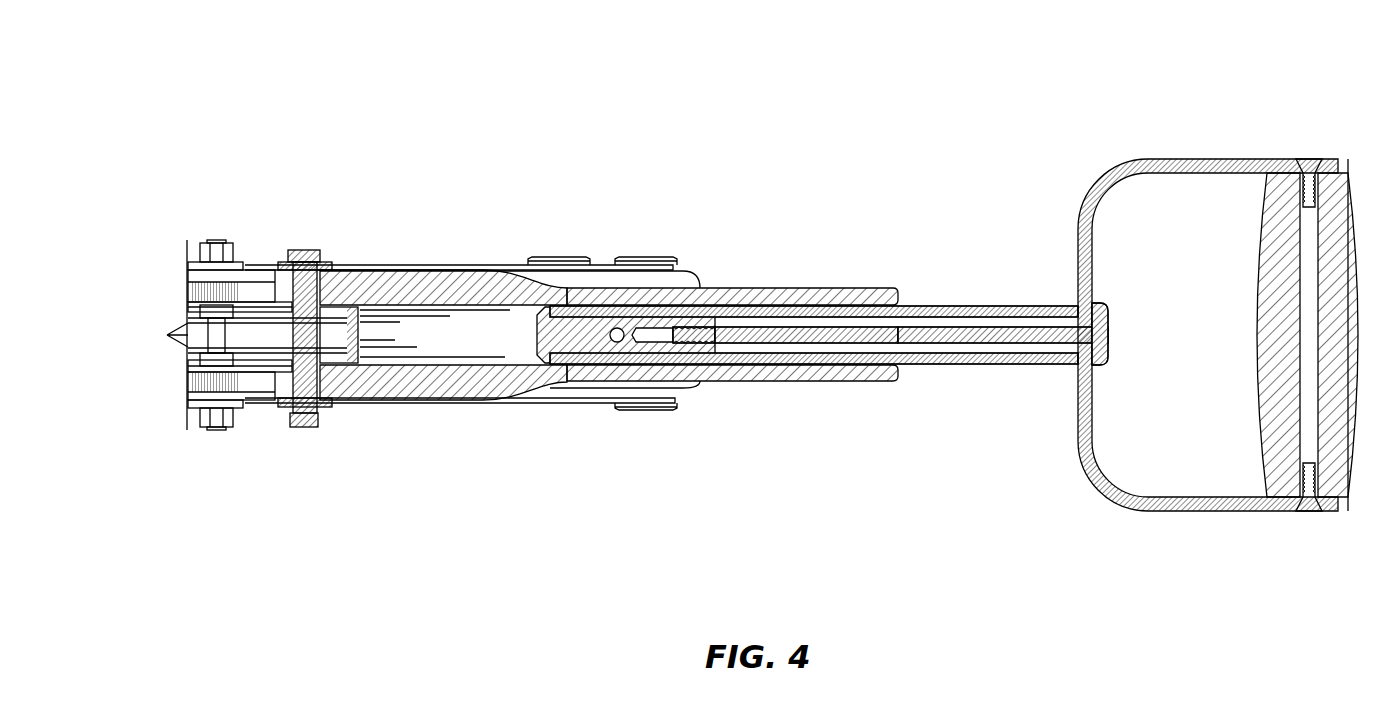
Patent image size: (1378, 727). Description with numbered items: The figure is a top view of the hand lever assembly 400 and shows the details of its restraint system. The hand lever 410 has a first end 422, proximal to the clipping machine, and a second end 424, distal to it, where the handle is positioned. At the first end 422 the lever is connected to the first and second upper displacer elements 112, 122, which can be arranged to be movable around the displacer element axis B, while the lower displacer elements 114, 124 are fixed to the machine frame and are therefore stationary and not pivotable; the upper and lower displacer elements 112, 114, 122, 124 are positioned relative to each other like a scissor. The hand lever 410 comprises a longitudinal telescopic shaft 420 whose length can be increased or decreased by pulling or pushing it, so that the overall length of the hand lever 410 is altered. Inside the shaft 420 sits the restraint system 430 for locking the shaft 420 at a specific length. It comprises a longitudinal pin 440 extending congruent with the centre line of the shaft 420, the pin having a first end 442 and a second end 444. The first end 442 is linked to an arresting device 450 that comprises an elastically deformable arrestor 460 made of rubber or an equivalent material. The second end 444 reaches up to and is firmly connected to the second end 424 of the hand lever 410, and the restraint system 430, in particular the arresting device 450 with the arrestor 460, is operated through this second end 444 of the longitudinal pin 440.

The hand lever assembly 400 is at (655, 98).
The hand lever 410 is at (953, 245).
The longitudinal telescopic shaft 420 is at (1006, 306).
The first end of the hand lever 422 is at (452, 400).
The second end of the hand lever 424 is at (1203, 510).
The restraint system 430 is at (858, 306).
The longitudinal pin 440 is at (898, 333).
The first end of the longitudinal pin 442 is at (697, 342).
The second end of the longitudinal pin 444 is at (1095, 332).
The arresting device 450 is at (720, 283).
The elastically deformable arrestor 460 is at (546, 328).
The displacer element axis B is at (303, 250).
The upper displacer element 112 is at (262, 367).
The lower displacer element 114 is at (243, 353).
The upper displacer element 122 is at (257, 303).
The lower displacer element 124 is at (238, 308).